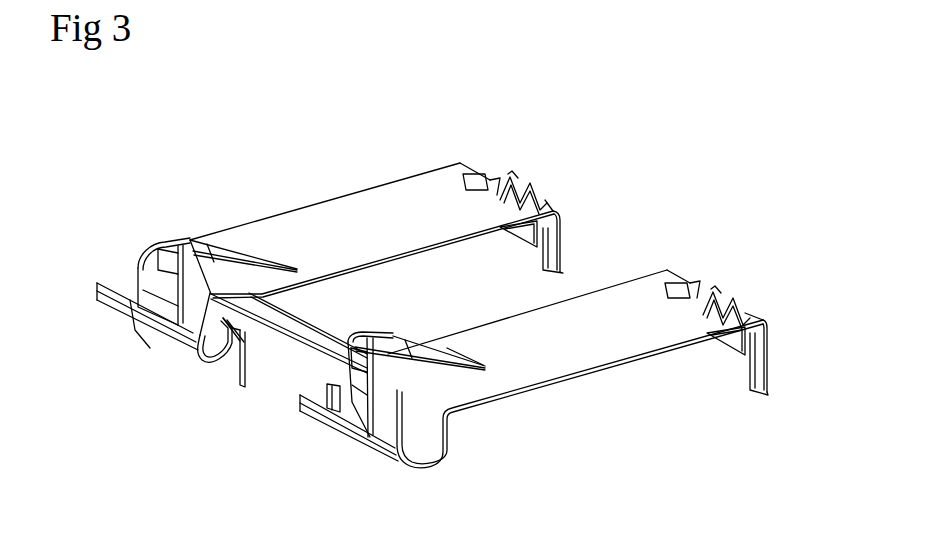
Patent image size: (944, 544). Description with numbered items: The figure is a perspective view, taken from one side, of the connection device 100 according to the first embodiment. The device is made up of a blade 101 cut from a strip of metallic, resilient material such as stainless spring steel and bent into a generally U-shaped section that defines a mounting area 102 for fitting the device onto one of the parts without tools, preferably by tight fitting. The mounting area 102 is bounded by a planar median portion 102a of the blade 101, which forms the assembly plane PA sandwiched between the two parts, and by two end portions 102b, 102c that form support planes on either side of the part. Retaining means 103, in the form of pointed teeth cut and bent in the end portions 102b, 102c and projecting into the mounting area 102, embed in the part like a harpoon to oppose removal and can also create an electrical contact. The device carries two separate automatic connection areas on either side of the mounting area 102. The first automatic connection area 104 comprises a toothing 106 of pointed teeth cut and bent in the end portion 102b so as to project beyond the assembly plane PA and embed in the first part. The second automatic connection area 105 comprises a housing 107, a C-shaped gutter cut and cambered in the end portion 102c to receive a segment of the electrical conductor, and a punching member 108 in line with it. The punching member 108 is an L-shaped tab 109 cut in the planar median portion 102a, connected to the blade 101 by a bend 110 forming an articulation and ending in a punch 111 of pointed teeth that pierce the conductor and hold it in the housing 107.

The connection device 100 is at (638, 172).
The blade 101 is at (660, 328).
The mounting area 102 is at (605, 392).
The planar median portion 102a is at (390, 227).
The end portion 102b is at (707, 360).
The end portion 102c is at (280, 372).
The retaining means 103 is at (563, 267).
The first automatic connection area 104 is at (516, 155).
The second automatic connection area 105 is at (153, 349).
The toothing 106 is at (522, 182).
The housing 107 is at (95, 305).
The punching member 108 is at (193, 238).
The L-shaped tab 109 is at (226, 244).
The bend 110 is at (490, 347).
The punch 111 is at (138, 266).